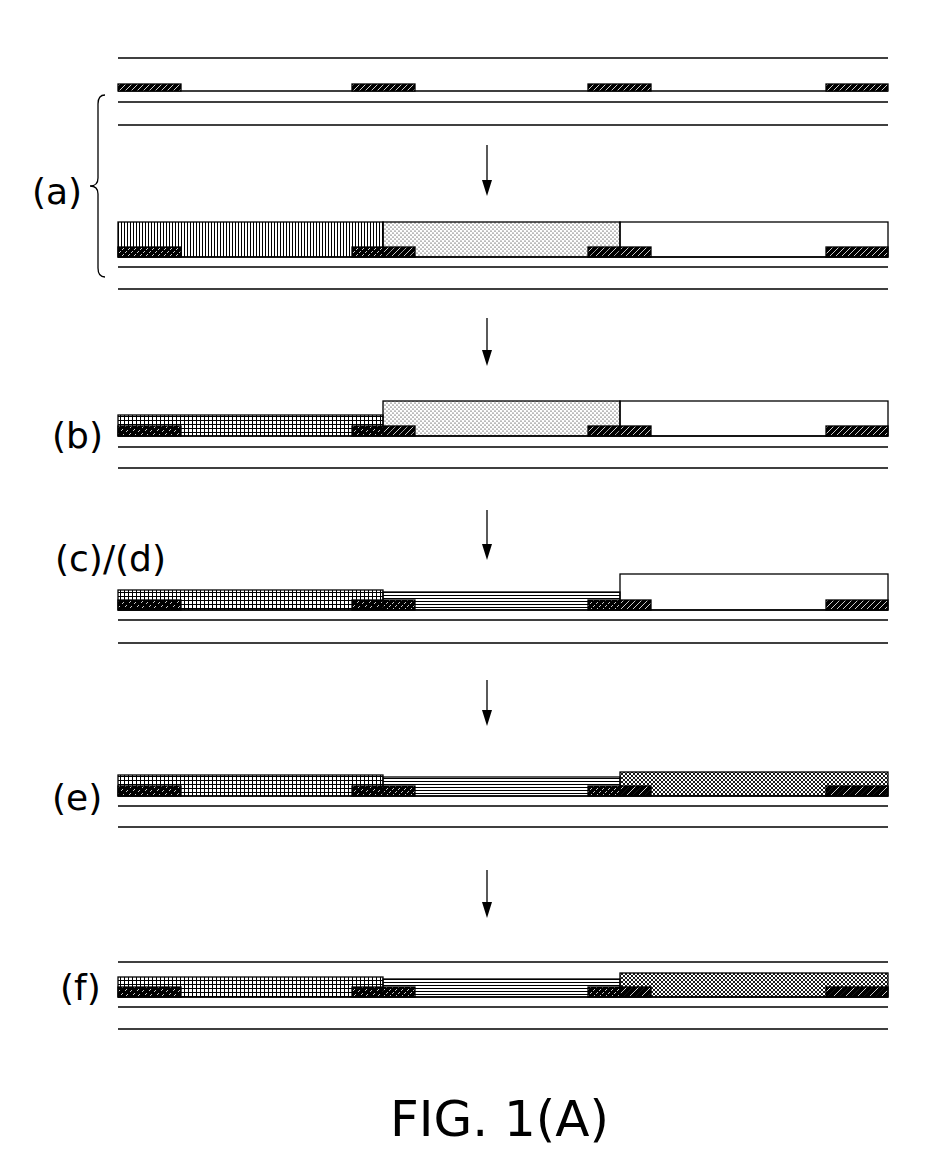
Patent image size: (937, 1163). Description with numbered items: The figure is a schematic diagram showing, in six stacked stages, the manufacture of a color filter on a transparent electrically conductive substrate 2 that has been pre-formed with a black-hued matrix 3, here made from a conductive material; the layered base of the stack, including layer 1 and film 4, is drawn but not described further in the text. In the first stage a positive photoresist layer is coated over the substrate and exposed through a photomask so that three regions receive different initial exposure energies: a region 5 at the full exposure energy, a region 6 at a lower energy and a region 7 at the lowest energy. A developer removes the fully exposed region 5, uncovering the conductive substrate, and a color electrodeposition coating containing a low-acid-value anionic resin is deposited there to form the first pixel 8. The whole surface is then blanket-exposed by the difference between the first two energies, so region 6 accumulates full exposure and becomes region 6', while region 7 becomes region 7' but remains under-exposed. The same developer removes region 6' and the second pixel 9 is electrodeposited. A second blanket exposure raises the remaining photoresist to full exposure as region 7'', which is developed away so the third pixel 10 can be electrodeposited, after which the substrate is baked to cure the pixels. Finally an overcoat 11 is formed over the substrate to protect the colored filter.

The substrate 1 is at (198, 112).
The transparent electrically conductive substrate 2 is at (281, 96).
The black-hued matrix 3 is at (370, 82).
The film layer 4 is at (661, 66).
The region with exposure energy D1 5 is at (285, 234).
The region with exposure energy D2 6 is at (501, 213).
The region with exposure energy D3 7 is at (754, 212).
The first pixel 8 is at (286, 414).
The second pixel 9 is at (450, 595).
The third pixel 10 is at (752, 777).
The overcoat 11 is at (623, 964).
The region achieving full exposure (D2 + IE1) 6' is at (502, 392).
The region with exposure energy D3 + IE1 7' is at (754, 392).
The region achieving full exposure (D3 + IE1 + IE2) 7'' is at (754, 572).